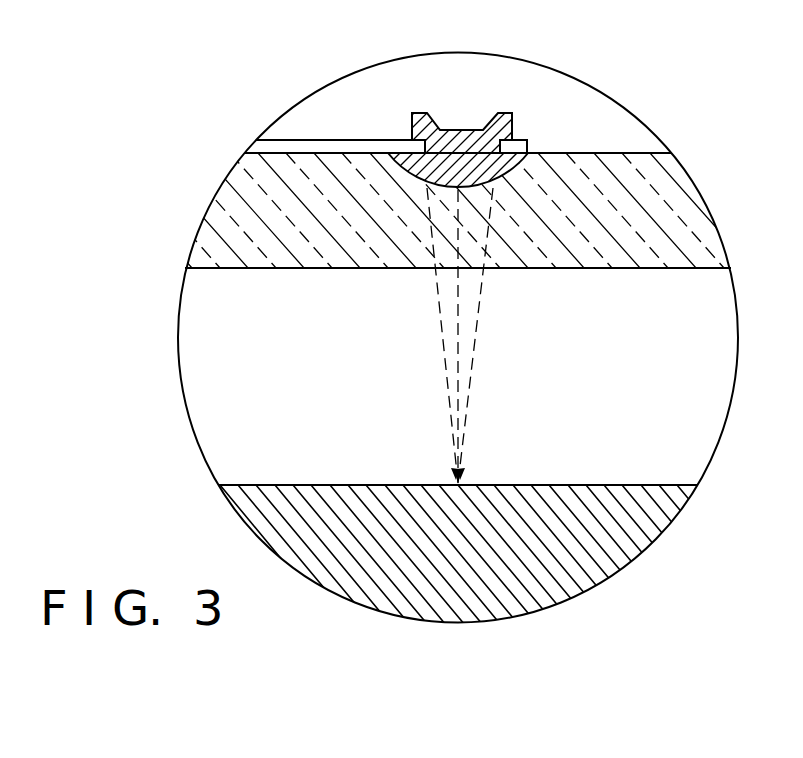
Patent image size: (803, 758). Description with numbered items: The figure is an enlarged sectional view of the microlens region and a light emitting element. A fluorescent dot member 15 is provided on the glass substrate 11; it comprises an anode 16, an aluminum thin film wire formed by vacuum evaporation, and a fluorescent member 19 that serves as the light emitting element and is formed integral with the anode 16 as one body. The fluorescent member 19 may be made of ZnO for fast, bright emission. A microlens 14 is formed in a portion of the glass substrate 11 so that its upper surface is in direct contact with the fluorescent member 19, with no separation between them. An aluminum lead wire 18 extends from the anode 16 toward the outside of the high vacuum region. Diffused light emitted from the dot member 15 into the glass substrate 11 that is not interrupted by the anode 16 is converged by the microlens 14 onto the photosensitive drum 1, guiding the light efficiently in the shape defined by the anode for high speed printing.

The photosensitive drum 1 is at (553, 485).
The glass substrate 11 is at (227, 228).
The microlens 14 is at (522, 170).
The fluorescent dot member 15 is at (512, 88).
The anode 16 is at (527, 153).
The aluminum lead wire 18 is at (312, 125).
The fluorescent member 19 is at (412, 113).